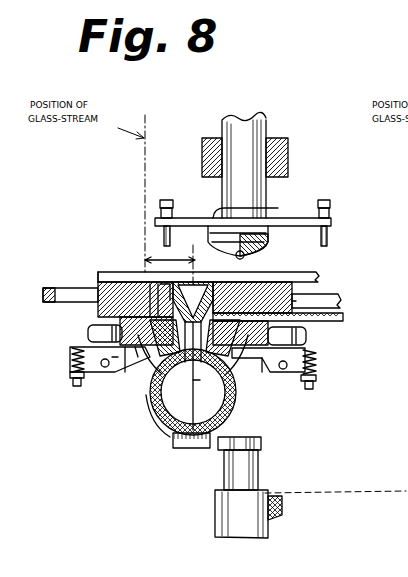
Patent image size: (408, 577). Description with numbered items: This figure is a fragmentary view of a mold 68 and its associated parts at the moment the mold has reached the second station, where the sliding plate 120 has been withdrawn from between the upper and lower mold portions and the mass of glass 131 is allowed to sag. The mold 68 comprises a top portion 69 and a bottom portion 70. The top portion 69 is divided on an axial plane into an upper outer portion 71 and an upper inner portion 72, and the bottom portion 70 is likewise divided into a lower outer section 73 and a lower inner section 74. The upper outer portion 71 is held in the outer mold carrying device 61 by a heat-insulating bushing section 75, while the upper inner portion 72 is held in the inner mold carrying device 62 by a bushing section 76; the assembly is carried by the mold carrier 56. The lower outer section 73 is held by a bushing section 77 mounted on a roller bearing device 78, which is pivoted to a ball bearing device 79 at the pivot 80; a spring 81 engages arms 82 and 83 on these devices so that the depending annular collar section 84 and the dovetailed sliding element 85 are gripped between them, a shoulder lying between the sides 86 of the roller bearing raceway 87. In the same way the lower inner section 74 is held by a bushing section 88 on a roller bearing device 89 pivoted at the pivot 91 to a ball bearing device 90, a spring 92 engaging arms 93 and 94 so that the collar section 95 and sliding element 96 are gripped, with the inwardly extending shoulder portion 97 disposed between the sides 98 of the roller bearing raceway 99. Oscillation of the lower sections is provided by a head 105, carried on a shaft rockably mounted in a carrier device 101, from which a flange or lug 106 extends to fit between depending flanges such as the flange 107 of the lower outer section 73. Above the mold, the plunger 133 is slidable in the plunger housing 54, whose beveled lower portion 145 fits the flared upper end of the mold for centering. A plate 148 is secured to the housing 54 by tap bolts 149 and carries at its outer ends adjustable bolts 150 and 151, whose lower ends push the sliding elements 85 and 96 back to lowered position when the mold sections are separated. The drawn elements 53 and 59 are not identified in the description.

The plunger housing 54 is at (248, 124).
The refractory block 53 is at (285, 145).
The plate 148 is at (332, 221).
The bolt 150 is at (166, 200).
The bolt 151 is at (325, 200).
The tap bolt 149 is at (273, 215).
The beveled lower portion 145 is at (210, 237).
The plunger 133 is at (282, 240).
The upper inner portion 72 is at (243, 260).
The bushing section 76 is at (205, 282).
The top plate 59 is at (312, 278).
The outer mold carrying device 61 is at (98, 278).
The mold carrier 56 is at (48, 288).
The sides of roller bearing raceway 98 is at (304, 303).
The upper outer portion 71 is at (132, 285).
The inner mold carrying device 62 is at (290, 283).
The sliding element 96 is at (265, 285).
The sliding element 85 is at (110, 275).
The bushing section 75 is at (160, 283).
The top portion 69 is at (172, 275).
The sliding plate 120 is at (340, 320).
The depending annular collar section 84 is at (118, 324).
The ball bearing device 79 is at (88, 333).
The pivot 80 is at (103, 366).
The arm 83 is at (72, 350).
The spring 81 is at (72, 366).
The arm 82 is at (78, 382).
The roller bearing raceway 87 is at (138, 350).
The sides of roller bearing raceway 86 is at (136, 353).
The roller bearing device 78 is at (115, 360).
The bushing section 77 is at (152, 372).
The lower outer section 73 is at (150, 398).
The lower inner section 74 is at (238, 398).
The mold 68 is at (157, 434).
The bottom portion 70 is at (166, 442).
The mass of glass 131 is at (162, 346).
The roller bearing raceway 99 is at (200, 345).
The bushing section 88 is at (196, 381).
The flange 107 is at (193, 448).
The depending annular collar section 95 is at (306, 336).
The inwardly extending shoulder portion 97 is at (240, 352).
The ball bearing device 90 is at (300, 352).
The roller bearing device 89 is at (280, 368).
The pivot 91 is at (286, 372).
The arm 94 is at (320, 366).
The spring 92 is at (318, 380).
The arm 93 is at (311, 388).
The flange or lug 106 is at (262, 442).
The head 105 is at (258, 476).
The carrier device 101 is at (278, 508).